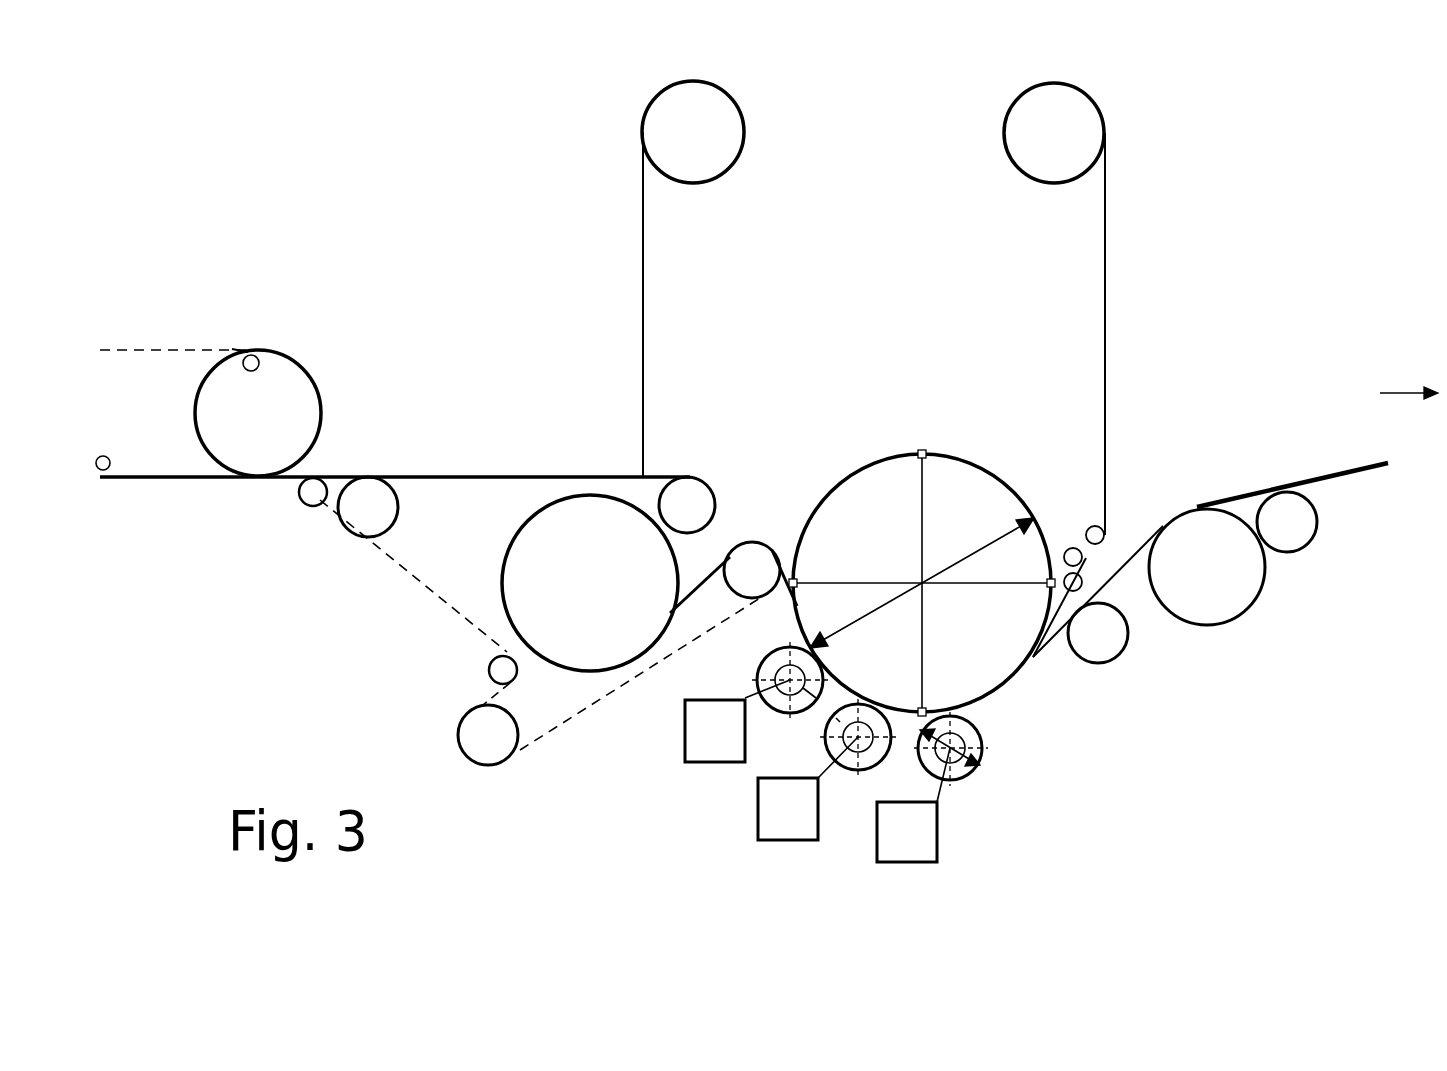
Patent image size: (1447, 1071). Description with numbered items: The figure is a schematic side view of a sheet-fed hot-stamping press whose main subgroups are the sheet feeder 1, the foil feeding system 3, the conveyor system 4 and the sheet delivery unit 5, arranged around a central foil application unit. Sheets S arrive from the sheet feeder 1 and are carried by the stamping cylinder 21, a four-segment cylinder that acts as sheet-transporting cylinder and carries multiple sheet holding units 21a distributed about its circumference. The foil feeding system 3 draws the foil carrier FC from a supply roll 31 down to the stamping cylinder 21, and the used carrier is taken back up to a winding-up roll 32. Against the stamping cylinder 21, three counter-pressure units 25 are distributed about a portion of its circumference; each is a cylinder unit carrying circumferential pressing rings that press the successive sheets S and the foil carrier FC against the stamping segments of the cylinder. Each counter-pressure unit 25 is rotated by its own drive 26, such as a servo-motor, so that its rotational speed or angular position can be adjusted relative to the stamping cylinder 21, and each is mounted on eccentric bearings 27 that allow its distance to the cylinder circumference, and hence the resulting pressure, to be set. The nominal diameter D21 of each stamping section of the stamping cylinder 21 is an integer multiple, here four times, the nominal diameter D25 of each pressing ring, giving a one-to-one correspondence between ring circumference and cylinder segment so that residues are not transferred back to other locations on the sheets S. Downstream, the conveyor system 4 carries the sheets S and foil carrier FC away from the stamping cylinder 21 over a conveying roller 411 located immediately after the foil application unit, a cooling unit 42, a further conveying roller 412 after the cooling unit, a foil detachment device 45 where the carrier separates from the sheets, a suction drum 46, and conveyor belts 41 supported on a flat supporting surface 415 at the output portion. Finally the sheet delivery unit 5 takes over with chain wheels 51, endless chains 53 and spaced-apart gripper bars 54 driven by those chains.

The sheet feeder 1 is at (1398, 395).
The foil feeding system 3 is at (1150, 256).
The conveyor system 4 is at (424, 623).
The sheet delivery unit 5 is at (181, 283).
The stamping cylinder 21 is at (990, 483).
The sheet holding units 21a is at (922, 450).
The counter-pressure units 25 is at (765, 648).
The drives 26 is at (703, 757).
The eccentric bearings 27 is at (818, 692).
The supply roll 31 is at (1095, 112).
The winding-up roll 32 is at (650, 112).
The conveyor belts/bands 41 is at (590, 708).
The cooling unit 42 is at (587, 498).
The foil detachment device 45 is at (658, 466).
The suction drum 46 is at (383, 510).
The chain wheels 51 is at (310, 402).
The endless chains 53 is at (118, 350).
The gripper bars 54 is at (106, 462).
The conveying roller/cylinder 411 is at (770, 547).
The conveying roller/cylinder 412 is at (700, 493).
The supporting surface 415 is at (498, 485).
The sheets S is at (1310, 480).
The foil carrier FC is at (1107, 318).
The nominal diameter of circumferential stamping section D21 is at (960, 550).
The nominal diameter of circumferential pressing element D25 is at (978, 753).